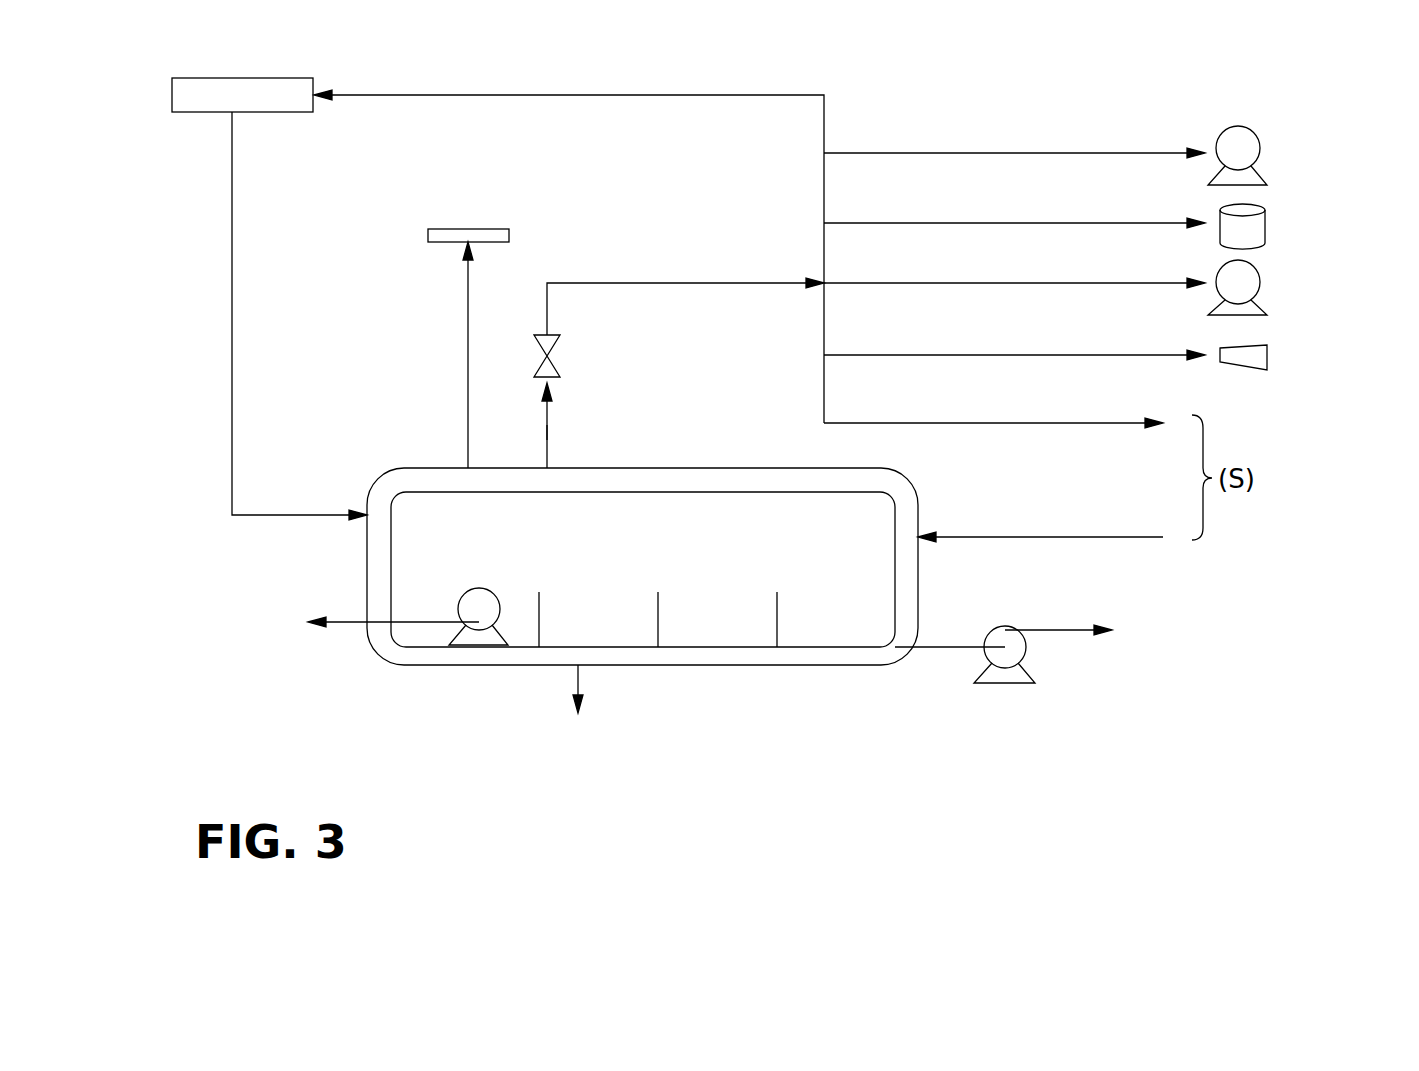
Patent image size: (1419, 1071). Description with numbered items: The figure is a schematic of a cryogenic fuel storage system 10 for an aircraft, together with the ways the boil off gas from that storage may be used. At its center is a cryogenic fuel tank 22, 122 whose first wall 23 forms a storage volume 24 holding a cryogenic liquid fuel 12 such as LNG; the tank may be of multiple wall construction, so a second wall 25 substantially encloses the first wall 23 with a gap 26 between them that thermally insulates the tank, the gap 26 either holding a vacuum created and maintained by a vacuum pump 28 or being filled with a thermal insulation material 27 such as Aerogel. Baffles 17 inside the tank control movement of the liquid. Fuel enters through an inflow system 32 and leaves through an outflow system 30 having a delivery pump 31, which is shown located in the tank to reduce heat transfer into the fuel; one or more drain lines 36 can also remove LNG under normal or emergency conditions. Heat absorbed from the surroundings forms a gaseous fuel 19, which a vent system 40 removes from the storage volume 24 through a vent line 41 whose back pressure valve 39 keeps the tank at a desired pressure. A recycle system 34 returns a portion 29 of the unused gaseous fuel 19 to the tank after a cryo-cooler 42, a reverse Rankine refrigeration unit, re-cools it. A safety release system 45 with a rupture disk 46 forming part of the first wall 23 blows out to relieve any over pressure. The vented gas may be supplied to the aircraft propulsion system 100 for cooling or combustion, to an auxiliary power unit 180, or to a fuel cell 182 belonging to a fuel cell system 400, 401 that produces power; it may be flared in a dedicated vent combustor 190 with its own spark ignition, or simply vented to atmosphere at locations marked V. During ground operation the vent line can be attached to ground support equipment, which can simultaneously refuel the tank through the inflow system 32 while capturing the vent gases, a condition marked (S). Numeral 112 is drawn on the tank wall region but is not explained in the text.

The cryogenic fuel storage system 10 is at (685, 434).
The cryogenic liquid fuel 12 is at (570, 503).
The baffles 17 is at (544, 608).
The gaseous fuel 19 is at (548, 433).
The cryogenic fuel tank 22 is at (690, 503).
The first wall 23 is at (808, 646).
The storage volume 24 is at (876, 540).
The second wall 25 is at (805, 666).
The gap 26 is at (713, 660).
The thermal insulation material 27 is at (378, 582).
The vacuum pump 28 is at (1015, 653).
The portion of unused gaseous fuel 29 is at (537, 95).
The outflow system 30 is at (361, 671).
The delivery pump 31 is at (493, 614).
The inflow system 32 is at (1028, 537).
The recycle system 34 is at (262, 298).
The drain line 36 is at (578, 677).
The back pressure valve 39 is at (548, 345).
The vent system 40 is at (656, 268).
The vent line 41 is at (548, 415).
The cryo-cooler 42 is at (270, 112).
The safety release system 45 is at (440, 298).
The rupture disk 46 is at (428, 236).
The aircraft propulsion system 100 is at (1225, 308).
The wall 112 is at (748, 503).
The cryogenic fuel tank 122 is at (871, 510).
The auxiliary power unit 180 is at (1222, 178).
The fuel cell 182 is at (1220, 233).
The vent combustor 190 is at (1252, 355).
The fuel cell system 400 is at (1274, 212).
The tank 401 is at (1265, 230).